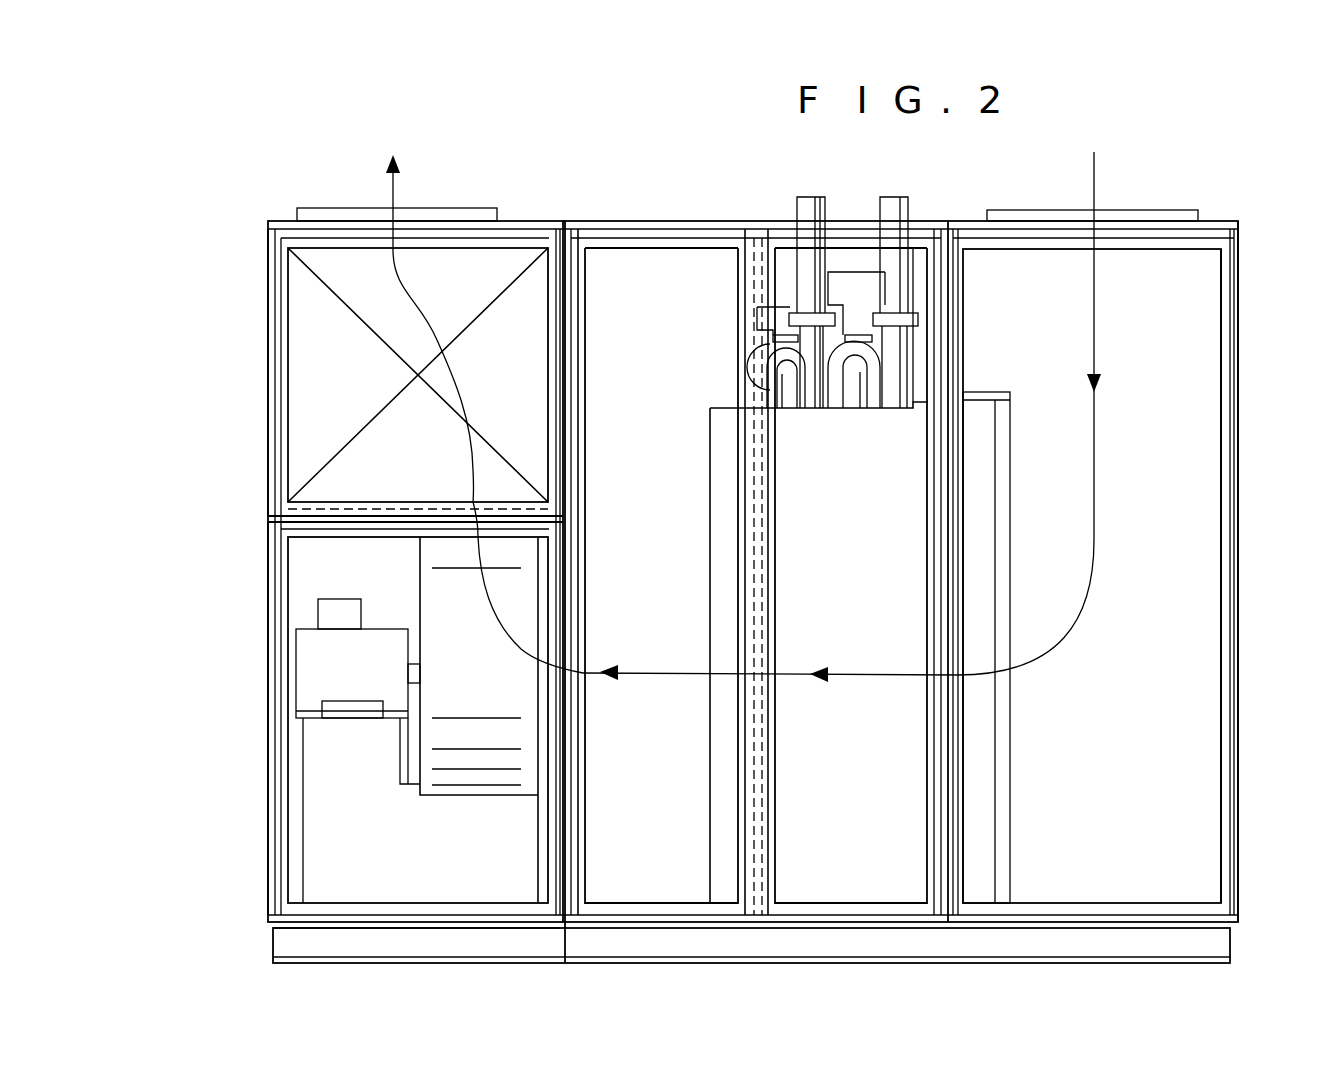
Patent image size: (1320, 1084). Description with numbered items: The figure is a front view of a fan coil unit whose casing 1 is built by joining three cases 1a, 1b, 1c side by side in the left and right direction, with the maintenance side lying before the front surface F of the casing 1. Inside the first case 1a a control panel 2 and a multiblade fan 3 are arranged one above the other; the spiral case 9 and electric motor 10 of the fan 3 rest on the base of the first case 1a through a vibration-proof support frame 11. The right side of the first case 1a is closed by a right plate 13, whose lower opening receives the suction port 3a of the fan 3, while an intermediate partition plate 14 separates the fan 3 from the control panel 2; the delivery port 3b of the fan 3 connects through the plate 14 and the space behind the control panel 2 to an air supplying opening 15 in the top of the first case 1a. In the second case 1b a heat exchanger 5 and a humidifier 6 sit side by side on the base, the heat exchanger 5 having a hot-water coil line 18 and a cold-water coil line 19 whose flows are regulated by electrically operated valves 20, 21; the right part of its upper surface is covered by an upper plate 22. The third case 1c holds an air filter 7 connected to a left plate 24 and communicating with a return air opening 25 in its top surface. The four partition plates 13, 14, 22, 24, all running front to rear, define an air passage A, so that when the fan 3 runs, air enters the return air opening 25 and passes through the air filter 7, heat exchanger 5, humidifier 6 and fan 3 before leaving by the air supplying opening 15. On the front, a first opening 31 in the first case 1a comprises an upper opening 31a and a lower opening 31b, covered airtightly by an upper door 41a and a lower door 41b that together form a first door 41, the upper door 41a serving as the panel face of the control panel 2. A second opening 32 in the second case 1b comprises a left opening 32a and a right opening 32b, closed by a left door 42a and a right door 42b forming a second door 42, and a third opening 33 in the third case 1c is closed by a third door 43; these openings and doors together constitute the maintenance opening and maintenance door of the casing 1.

The casing 1 is at (1243, 570).
The first case 1a is at (282, 218).
The second case 1b is at (610, 220).
The third case 1c is at (1210, 220).
The control panel 2 is at (307, 332).
The multiblade fan 3 is at (417, 709).
The suction port 3a is at (549, 673).
The delivery port 3b is at (423, 502).
The heat exchanger 5 is at (797, 807).
The humidifier 6 is at (717, 733).
The air filter 7 is at (990, 750).
The spiral case 9 is at (479, 688).
The electric motor 10 is at (394, 720).
The vibration-proof support frame 11 is at (300, 790).
The right plate 13 is at (543, 703).
The intermediate partition plate 14 is at (322, 507).
The air supplying opening 15 is at (427, 208).
The hot-water coil line 18 is at (827, 210).
The cold-water coil line 19 is at (910, 205).
The electrically operated valve 20 is at (793, 392).
The electrically operated valve 21 is at (835, 395).
The upper plate 22 is at (918, 410).
The left plate 24 is at (955, 358).
The return air opening 25 is at (1138, 208).
The first opening 31 is at (359, 521).
The upper opening 31a is at (292, 497).
The lower opening 31b is at (383, 543).
The second opening 32 is at (756, 201).
The left opening 32a is at (720, 258).
The right opening 32b is at (788, 258).
The third opening 33 is at (1215, 515).
The first door 41 is at (237, 572).
The upper door 41a is at (273, 440).
The lower door 41b is at (273, 658).
The second door 42 is at (719, 572).
The left door 42a is at (582, 563).
The right door 42b is at (770, 558).
The third door 43 is at (1233, 412).
The air passage A is at (842, 417).
The front surface F is at (285, 818).